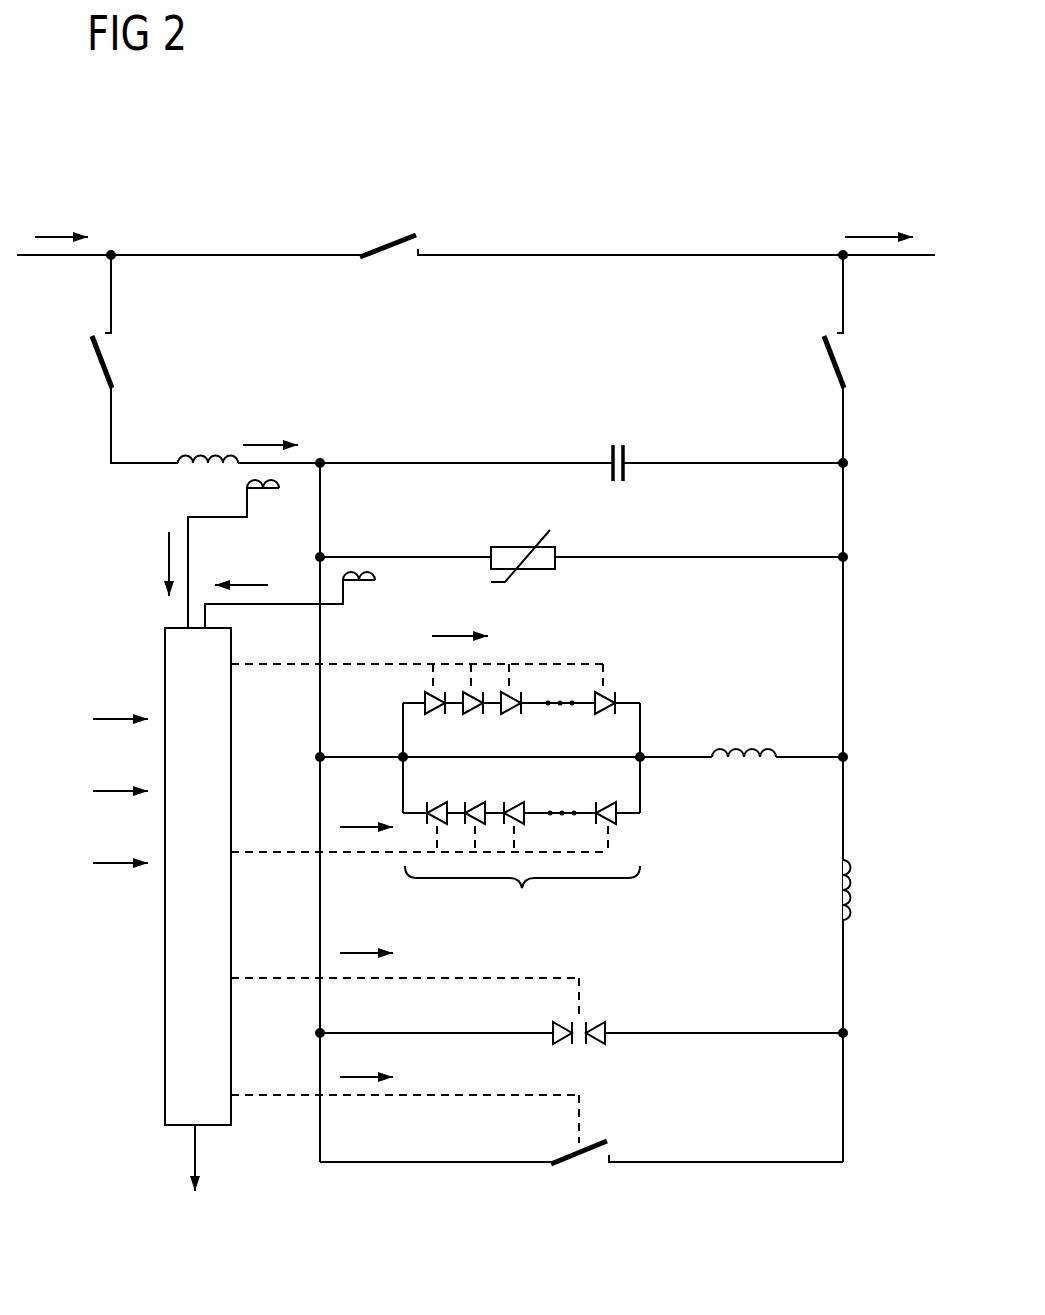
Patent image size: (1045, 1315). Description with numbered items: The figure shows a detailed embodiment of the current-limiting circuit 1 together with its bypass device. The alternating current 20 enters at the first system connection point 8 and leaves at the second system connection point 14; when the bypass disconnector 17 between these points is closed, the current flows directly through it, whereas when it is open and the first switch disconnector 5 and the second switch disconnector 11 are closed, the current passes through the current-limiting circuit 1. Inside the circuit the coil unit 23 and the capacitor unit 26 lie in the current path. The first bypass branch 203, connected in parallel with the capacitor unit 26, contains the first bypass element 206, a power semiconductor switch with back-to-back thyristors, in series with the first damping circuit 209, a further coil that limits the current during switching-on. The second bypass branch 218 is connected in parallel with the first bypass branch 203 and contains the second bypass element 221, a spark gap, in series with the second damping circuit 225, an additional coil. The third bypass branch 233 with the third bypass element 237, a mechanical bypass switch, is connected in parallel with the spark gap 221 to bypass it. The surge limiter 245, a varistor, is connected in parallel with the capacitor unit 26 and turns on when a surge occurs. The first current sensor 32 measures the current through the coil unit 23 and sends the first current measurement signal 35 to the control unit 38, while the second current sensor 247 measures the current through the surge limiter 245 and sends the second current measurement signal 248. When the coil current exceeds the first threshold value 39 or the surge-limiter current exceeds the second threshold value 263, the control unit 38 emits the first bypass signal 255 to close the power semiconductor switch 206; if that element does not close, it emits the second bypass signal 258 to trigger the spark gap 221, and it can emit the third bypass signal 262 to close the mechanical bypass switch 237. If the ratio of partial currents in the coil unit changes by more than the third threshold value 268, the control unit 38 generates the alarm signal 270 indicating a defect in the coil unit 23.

The current-limiting circuit 1 is at (866, 997).
The first switch disconnector 5 is at (97, 364).
The first system connection point 8 is at (26, 253).
The second switch disconnector 11 is at (829, 362).
The second system connection point 14 is at (929, 253).
The bypass disconnector 17 is at (390, 246).
The alternating current 20 is at (58, 237).
The coil unit 23 is at (196, 460).
The capacitor unit 26 is at (612, 456).
The first current sensor 32 is at (268, 491).
The first current measurement signal 35 is at (166, 558).
The control unit 38 is at (165, 1052).
The first threshold value 39 is at (118, 719).
The first bypass branch 203 is at (680, 650).
The first bypass element 206 is at (522, 810).
The first damping circuit 209 is at (749, 752).
The second bypass branch 218 is at (680, 1008).
The second bypass element 221 is at (582, 1042).
The second damping circuit 225 is at (851, 888).
The third bypass branch 233 is at (680, 1133).
The third bypass element 237 is at (585, 1162).
The surge limiter 245 is at (516, 547).
The second current sensor 247 is at (365, 583).
The second current measurement signal 248 is at (255, 585).
The first bypass signal 255 is at (458, 636).
The second bypass signal 258 is at (367, 953).
The third bypass signal 262 is at (352, 1077).
The second threshold value 263 is at (118, 791).
The third threshold value 268 is at (118, 863).
The alarm signal 270 is at (195, 1160).